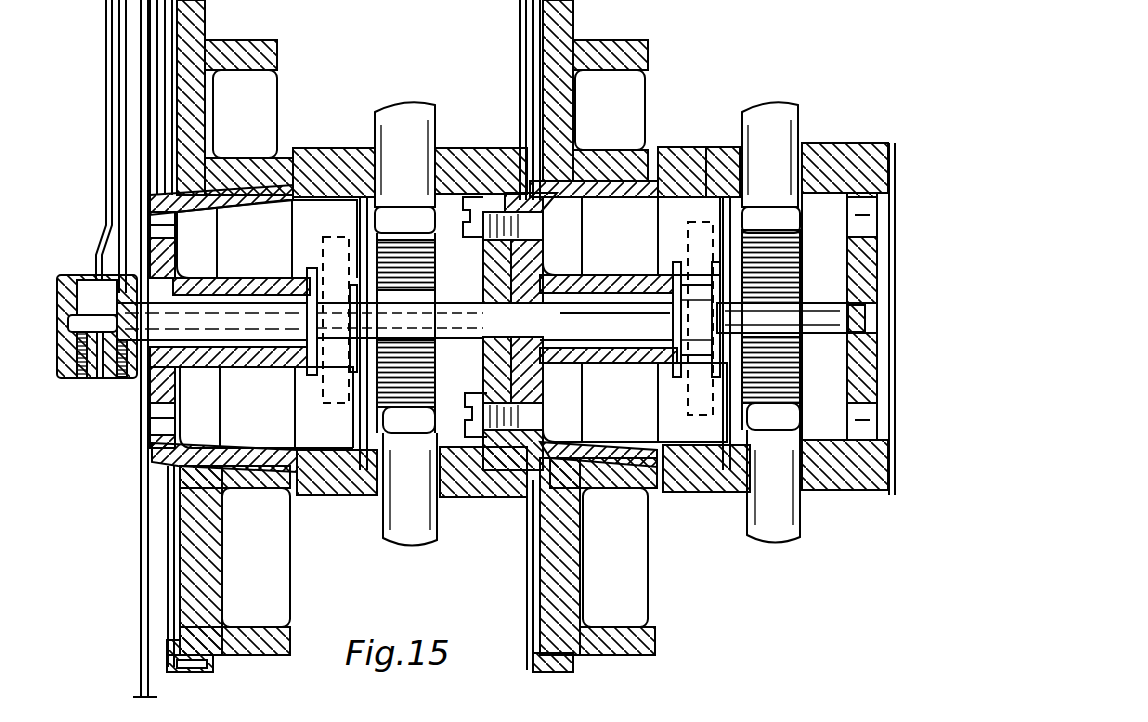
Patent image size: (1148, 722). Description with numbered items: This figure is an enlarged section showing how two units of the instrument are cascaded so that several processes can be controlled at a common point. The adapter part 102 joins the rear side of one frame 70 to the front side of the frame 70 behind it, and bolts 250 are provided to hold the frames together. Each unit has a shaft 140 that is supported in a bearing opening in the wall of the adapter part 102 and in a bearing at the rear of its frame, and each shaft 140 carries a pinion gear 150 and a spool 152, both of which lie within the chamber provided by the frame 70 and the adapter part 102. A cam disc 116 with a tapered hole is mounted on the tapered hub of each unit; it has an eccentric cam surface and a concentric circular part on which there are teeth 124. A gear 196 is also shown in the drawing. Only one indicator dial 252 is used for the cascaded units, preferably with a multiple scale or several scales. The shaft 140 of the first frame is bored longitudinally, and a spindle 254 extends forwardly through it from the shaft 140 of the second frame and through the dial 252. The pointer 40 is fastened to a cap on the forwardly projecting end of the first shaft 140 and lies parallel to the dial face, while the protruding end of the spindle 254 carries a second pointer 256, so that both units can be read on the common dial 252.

The pointer 40 is at (128, 103).
The frame 70 is at (490, 146).
The adapter part 102 is at (253, 187).
The cam disc 116 is at (249, 44).
The teeth 124 is at (198, 673).
The shaft 140 is at (273, 263).
The pinion gear 150 is at (463, 338).
The spool 152 is at (698, 372).
The gear 196 is at (385, 525).
The bolts 250 is at (497, 440).
The indicator dial 252 is at (141, 440).
The spindle 254 is at (262, 348).
The second pointer 256 is at (106, 178).